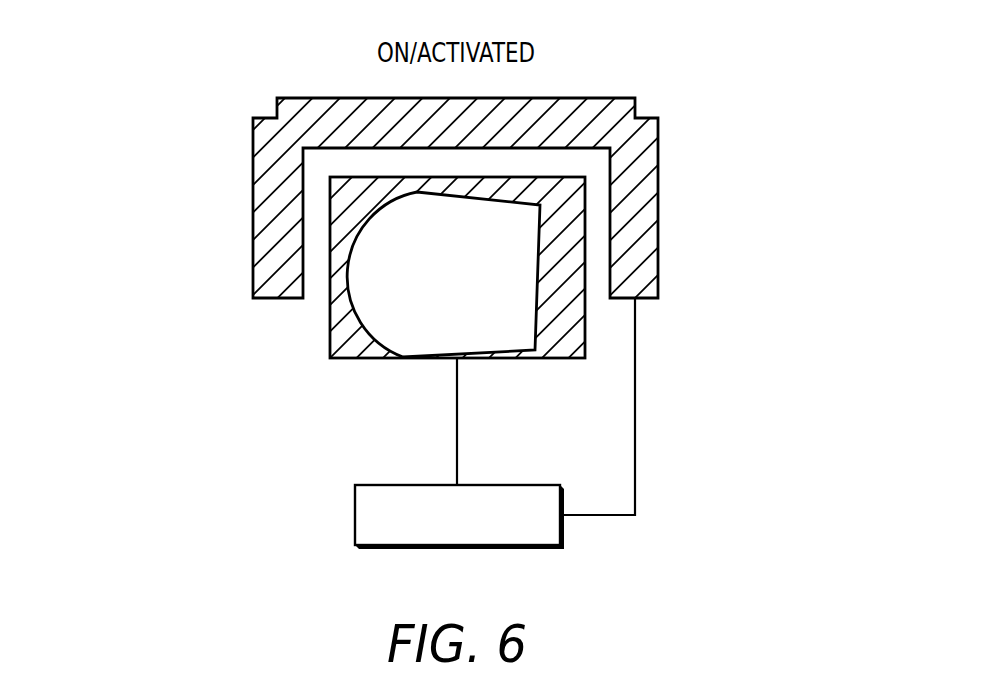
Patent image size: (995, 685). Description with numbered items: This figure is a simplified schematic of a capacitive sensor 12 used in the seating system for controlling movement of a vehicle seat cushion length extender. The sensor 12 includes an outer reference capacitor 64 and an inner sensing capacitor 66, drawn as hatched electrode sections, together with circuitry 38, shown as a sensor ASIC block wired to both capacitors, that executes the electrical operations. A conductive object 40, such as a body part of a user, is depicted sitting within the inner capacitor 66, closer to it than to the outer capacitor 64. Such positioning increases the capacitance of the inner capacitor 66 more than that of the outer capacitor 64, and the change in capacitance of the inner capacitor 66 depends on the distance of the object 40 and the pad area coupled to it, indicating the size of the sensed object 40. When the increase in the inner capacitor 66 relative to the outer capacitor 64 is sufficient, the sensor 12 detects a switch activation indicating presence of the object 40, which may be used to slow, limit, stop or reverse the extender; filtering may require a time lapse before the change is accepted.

The sensor 12 is at (791, 46).
The capacitor C0 64 is at (236, 177).
The capacitor C1 66 is at (313, 325).
The object 40 is at (513, 332).
The circuitry 38 is at (537, 484).